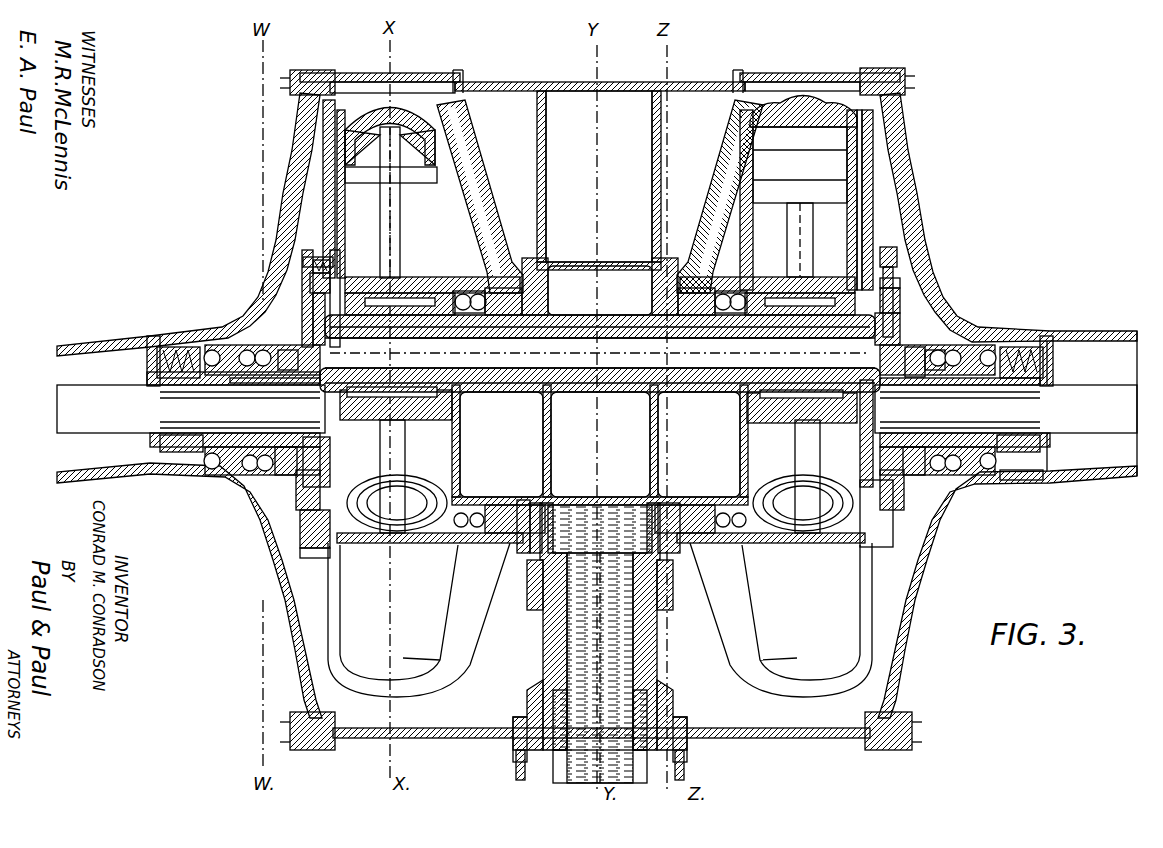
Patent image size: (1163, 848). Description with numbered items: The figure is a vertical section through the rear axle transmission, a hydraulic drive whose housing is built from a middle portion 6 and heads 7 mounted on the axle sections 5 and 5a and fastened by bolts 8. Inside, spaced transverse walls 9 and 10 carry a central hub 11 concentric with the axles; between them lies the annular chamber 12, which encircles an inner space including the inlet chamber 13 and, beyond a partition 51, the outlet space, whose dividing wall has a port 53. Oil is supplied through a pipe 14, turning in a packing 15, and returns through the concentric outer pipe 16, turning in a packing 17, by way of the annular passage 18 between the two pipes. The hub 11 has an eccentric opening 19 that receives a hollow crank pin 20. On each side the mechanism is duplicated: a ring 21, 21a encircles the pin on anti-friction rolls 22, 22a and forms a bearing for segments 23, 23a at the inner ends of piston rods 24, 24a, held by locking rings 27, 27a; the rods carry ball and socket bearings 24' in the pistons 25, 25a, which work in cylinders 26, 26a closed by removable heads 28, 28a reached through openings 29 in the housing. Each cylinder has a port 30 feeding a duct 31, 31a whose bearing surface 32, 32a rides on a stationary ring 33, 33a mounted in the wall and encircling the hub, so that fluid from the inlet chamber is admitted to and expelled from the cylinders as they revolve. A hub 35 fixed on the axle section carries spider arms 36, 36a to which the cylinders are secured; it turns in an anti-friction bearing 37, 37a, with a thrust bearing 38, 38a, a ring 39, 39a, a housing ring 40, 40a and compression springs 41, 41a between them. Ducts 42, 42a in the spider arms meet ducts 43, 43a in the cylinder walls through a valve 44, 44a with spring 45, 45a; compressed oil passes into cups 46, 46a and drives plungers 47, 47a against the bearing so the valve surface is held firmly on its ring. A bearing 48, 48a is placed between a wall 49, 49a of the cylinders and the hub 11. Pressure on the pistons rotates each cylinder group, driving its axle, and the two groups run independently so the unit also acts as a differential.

The axle section 5 is at (1087, 390).
The axle section 5a is at (72, 413).
The middle portion 6 is at (548, 85).
The heads 7 is at (291, 143).
The bolts 8 is at (293, 85).
The transverse wall 9 is at (655, 125).
The transverse wall 10 is at (538, 118).
The hub 11 is at (462, 465).
The annular chamber 12 is at (605, 100).
The inlet chamber 13 is at (597, 508).
The pipe 14 is at (580, 633).
The packing 15 is at (547, 597).
The second pipe 16 is at (553, 683).
The packing 17 is at (660, 708).
The annular passage 18 is at (655, 683).
The opening 19 is at (600, 441).
The crank pin 20 is at (501, 444).
The ring 21 is at (900, 520).
The ring 21a is at (290, 573).
The anti-friction rolls 22 is at (807, 263).
The anti-friction rolls 22a is at (290, 473).
The segments 23 is at (855, 520).
The segments 23a is at (450, 263).
The piston rods 24 is at (873, 361).
The piston rods 24a is at (353, 230).
The ball and socket bearings 24' is at (629, 92).
The pistons 25 is at (893, 117).
The pistons 25a is at (320, 187).
The cylinders 26 is at (837, 160).
The cylinders 26a is at (382, 220).
The locking rings 27 is at (740, 408).
The locking rings 27a is at (300, 530).
The removable head 28 is at (800, 97).
The removable head 28a is at (383, 97).
The opening 29 is at (430, 74).
The port 30 is at (735, 107).
The duct 31 is at (717, 177).
The duct 31a is at (465, 187).
The bearing surface 32 is at (677, 260).
The bearing surface 32a is at (520, 256).
The stationary ring 33 is at (648, 288).
The stationary ring 33a is at (610, 255).
The hub 35 is at (1013, 300).
The spider arms 36 is at (947, 297).
The spider arms 36a is at (318, 300).
The anti-friction bearing 37 is at (940, 467).
The anti-friction bearing 37a is at (220, 477).
The thrust bearing 38 is at (985, 325).
The thrust bearing 38a is at (200, 327).
The ring 39 is at (1000, 467).
The ring 39a is at (187, 487).
The ring 40 is at (1047, 480).
The ring 40a is at (150, 493).
The compression springs 41 is at (990, 350).
The compression springs 41a is at (160, 345).
The ducts 42 is at (903, 300).
The ducts 42a is at (315, 282).
The ducts 43 is at (845, 203).
The ducts 43a is at (333, 210).
The valve 44 is at (900, 230).
The valve 44a is at (305, 252).
The spring 45 is at (890, 267).
The spring 45a is at (313, 265).
The cup 46 is at (960, 300).
The cup 46a is at (300, 330).
The plunger 47 is at (987, 300).
The plunger 47a is at (270, 347).
The bearing 48 is at (760, 478).
The bearing 48a is at (335, 655).
The wall 49 is at (870, 573).
The wall 49a is at (447, 537).
The partition 51 is at (607, 290).
The port 53 is at (643, 650).